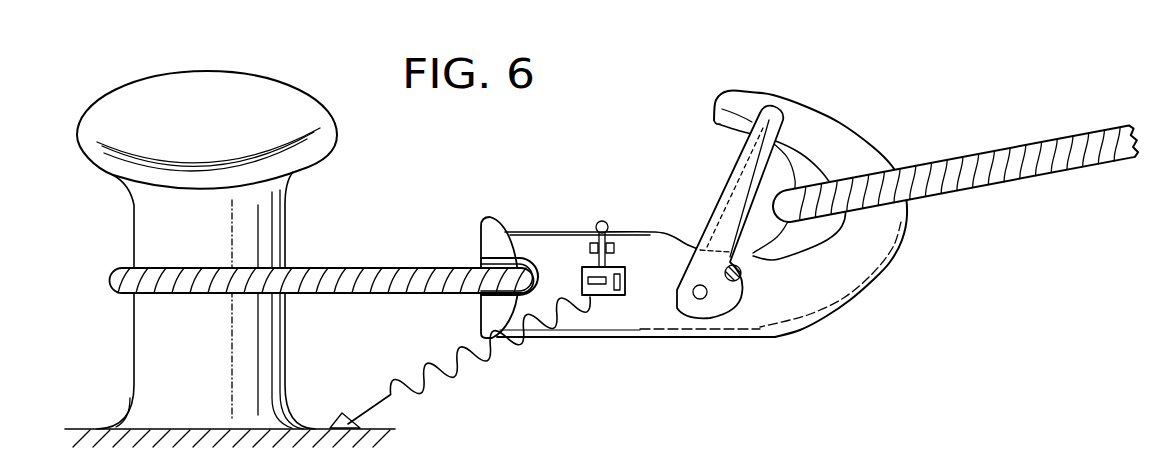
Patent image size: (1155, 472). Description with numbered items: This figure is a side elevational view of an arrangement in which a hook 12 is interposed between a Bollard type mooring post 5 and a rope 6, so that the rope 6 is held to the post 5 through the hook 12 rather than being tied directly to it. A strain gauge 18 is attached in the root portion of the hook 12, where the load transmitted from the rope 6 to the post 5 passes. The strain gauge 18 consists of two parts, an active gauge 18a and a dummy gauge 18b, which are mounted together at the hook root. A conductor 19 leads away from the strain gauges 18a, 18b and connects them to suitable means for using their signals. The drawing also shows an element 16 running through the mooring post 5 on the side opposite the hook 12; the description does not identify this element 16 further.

The Bollard type mooring post 5 is at (233, 70).
The rope 6 is at (985, 170).
The hook 12 is at (670, 147).
The line 16 is at (393, 268).
The strain gauge 18 is at (610, 296).
The active gauge 18a is at (582, 267).
The dummy gauge 18b is at (618, 274).
The conductor 19 is at (493, 362).